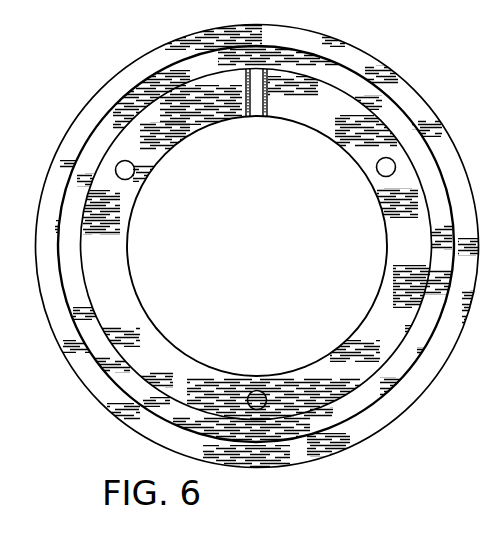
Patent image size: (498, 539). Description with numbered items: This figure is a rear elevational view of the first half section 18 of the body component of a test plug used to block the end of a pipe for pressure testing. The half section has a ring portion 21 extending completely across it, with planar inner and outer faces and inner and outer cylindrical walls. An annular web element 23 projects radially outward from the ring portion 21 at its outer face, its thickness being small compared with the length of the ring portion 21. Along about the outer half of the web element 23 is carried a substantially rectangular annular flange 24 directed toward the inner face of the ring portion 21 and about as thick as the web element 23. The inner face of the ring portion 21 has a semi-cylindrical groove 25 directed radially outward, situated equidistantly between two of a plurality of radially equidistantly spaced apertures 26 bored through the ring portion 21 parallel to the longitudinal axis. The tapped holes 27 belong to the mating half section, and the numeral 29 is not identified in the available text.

The first half section 18 is at (143, 305).
The ring portion 21 is at (411, 245).
The annular web element 23 is at (400, 122).
The annular flange 24 is at (97, 112).
The semi-cylindrical groove 25 is at (257, 117).
The apertures 26 is at (127, 170).
The adjacent member 29 is at (484, 364).
The tapped holes 27 is at (490, 409).